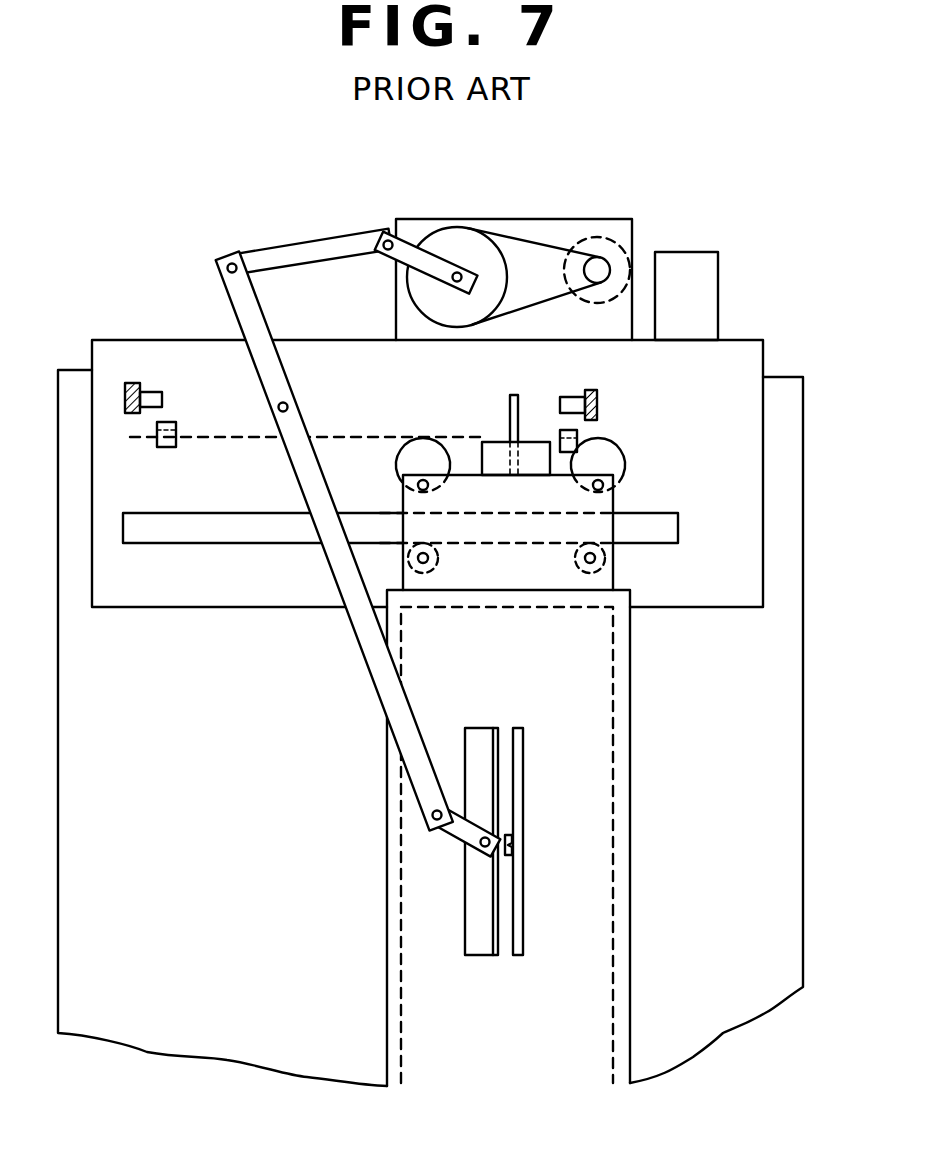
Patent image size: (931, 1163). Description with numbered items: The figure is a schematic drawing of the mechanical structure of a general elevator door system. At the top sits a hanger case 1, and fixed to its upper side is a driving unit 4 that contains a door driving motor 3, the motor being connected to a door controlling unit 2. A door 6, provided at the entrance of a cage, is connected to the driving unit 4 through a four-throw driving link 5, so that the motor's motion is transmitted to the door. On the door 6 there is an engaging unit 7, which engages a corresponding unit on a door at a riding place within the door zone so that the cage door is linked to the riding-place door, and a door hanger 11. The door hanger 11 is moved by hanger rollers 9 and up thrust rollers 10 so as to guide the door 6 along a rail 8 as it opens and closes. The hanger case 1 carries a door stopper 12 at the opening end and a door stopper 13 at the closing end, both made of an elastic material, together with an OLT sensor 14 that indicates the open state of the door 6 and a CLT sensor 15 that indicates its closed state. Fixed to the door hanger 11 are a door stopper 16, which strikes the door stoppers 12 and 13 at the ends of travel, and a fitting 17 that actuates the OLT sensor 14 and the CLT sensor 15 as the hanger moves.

The hanger case 1 is at (727, 342).
The door controlling unit 2 is at (682, 252).
The door driving motor 3 is at (615, 222).
The driving unit 4 is at (515, 219).
The four-throw driving link 5 is at (280, 425).
The door 6 is at (598, 775).
The engaging unit 7 is at (505, 957).
The rail 8 is at (205, 543).
The hanger rollers 9 is at (403, 467).
The up thrust rollers 10 is at (407, 565).
The door hanger 11 is at (617, 530).
The door stopper 12 is at (152, 390).
The door stopper 13 is at (570, 397).
The OLT sensor 14 is at (168, 448).
The CLT sensor 15 is at (580, 440).
The door stopper 16 is at (512, 397).
The fitting 17 is at (550, 463).